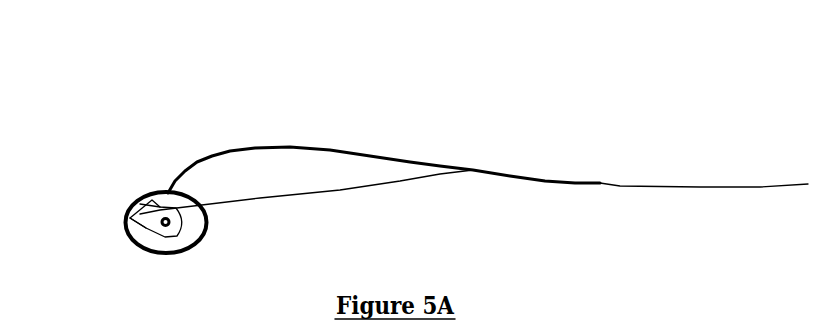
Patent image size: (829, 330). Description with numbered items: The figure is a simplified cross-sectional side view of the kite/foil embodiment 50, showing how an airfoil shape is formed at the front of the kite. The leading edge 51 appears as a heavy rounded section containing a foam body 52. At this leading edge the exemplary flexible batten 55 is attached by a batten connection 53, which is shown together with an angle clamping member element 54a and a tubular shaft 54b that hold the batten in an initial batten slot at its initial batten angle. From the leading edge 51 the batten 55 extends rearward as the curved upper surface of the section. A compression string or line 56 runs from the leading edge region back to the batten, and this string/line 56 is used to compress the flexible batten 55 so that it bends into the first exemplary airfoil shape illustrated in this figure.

The kite/foil embodiment 50 is at (417, 171).
The leading edge 51 is at (135, 214).
The foam body 52 is at (145, 228).
The batten connection 53 is at (148, 212).
The angle clamping member element 54a is at (150, 236).
The tubular shaft 54b is at (166, 238).
The flexible batten 55 is at (600, 182).
The string/line 56 is at (340, 190).